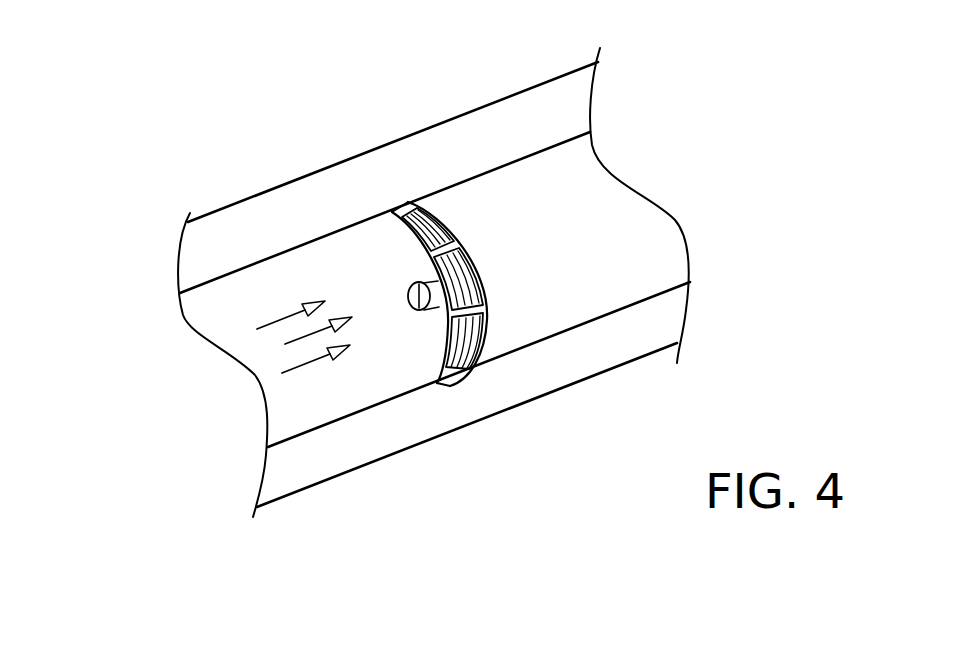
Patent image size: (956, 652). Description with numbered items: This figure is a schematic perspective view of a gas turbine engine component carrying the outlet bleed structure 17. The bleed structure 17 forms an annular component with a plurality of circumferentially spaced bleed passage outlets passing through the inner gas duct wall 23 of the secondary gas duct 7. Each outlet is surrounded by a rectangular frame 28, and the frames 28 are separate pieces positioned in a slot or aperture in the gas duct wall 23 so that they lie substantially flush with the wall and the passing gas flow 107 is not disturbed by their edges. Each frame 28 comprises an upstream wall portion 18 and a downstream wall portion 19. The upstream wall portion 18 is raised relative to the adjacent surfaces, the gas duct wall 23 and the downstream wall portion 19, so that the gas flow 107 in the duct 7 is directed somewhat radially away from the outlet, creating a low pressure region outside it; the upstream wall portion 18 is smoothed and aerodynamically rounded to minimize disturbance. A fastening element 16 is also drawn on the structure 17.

The secondary gas duct 7 is at (492, 395).
The fastening knob 16 is at (410, 282).
The outlet bleed structure 17 is at (472, 227).
The upstream wall portion 18 is at (443, 313).
The downstream wall portion 19 is at (470, 262).
The gas duct wall 23 is at (320, 410).
The rectangular frame 28 is at (485, 307).
The gas flow 107 is at (277, 318).